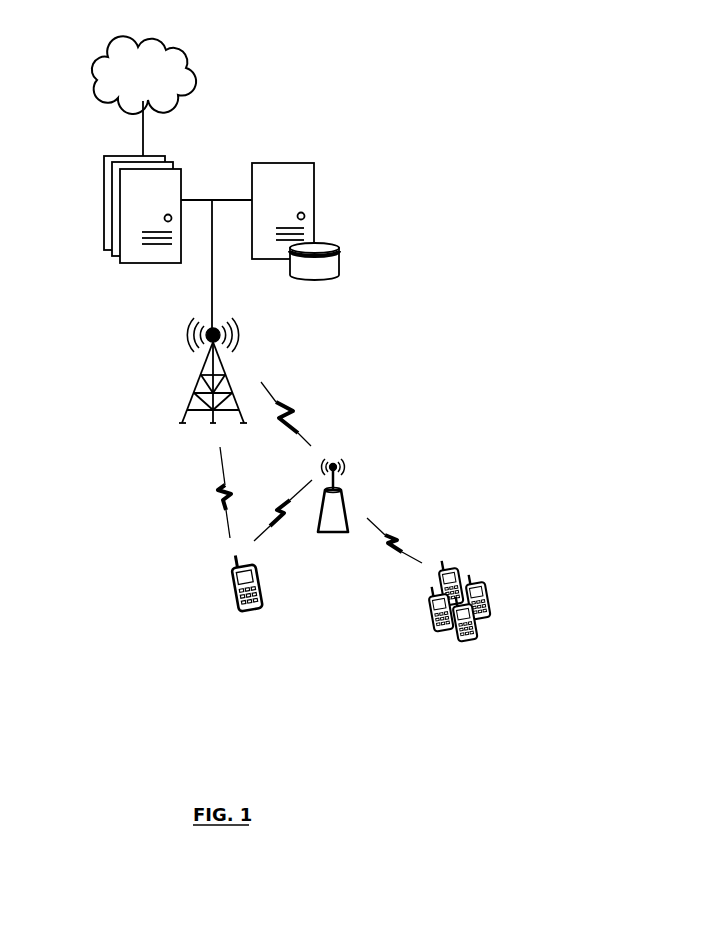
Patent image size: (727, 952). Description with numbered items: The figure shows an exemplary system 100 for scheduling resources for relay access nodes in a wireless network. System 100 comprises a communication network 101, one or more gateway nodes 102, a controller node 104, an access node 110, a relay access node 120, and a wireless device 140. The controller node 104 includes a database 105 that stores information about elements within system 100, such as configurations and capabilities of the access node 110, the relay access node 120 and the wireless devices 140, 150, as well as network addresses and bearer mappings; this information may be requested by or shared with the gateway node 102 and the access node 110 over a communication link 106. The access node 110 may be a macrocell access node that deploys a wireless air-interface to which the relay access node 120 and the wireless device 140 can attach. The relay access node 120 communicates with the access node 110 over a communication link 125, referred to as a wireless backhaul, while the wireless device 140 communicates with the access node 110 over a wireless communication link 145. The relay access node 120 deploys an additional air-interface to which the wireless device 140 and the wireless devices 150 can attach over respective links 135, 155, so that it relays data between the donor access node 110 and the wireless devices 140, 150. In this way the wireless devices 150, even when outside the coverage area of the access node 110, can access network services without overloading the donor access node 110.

The system 100 is at (331, 54).
The communication network 101 is at (158, 82).
The gateway node 102 is at (104, 156).
The controller node 104 is at (310, 163).
The database 105 is at (338, 245).
The communication link 106 is at (212, 278).
The access node 110 is at (202, 387).
The relay access node 120 is at (344, 494).
The communication link 125 is at (290, 410).
The wireless link 135 is at (270, 524).
The wireless device 140 is at (234, 593).
The wireless communication link 145 is at (220, 492).
The wireless devices 150 is at (500, 574).
The wireless link 155 is at (395, 540).